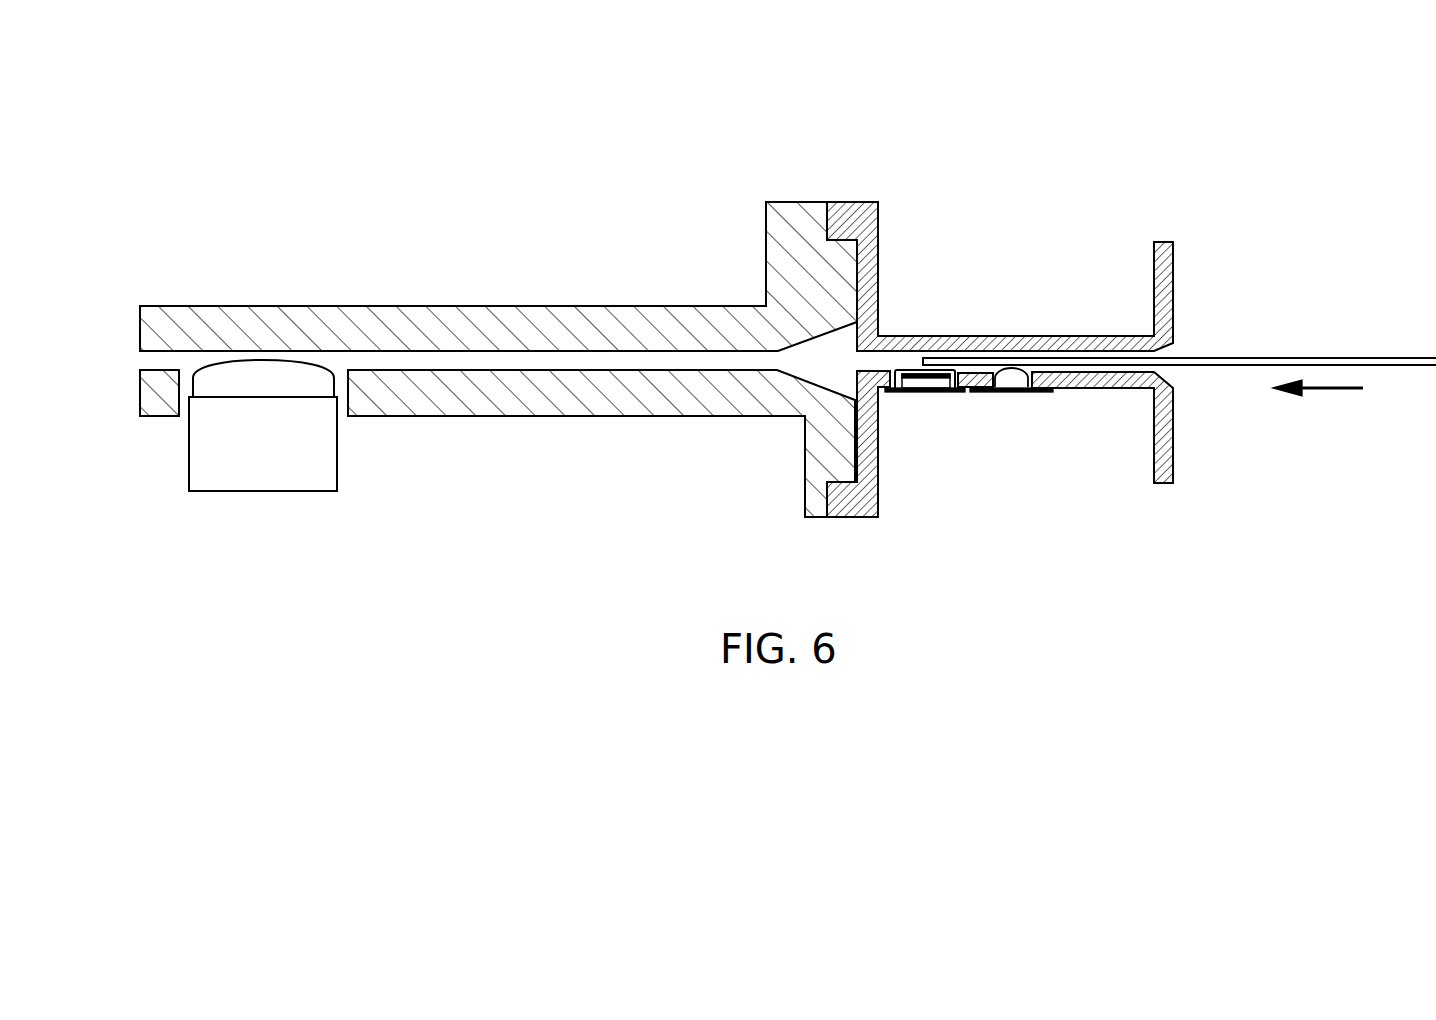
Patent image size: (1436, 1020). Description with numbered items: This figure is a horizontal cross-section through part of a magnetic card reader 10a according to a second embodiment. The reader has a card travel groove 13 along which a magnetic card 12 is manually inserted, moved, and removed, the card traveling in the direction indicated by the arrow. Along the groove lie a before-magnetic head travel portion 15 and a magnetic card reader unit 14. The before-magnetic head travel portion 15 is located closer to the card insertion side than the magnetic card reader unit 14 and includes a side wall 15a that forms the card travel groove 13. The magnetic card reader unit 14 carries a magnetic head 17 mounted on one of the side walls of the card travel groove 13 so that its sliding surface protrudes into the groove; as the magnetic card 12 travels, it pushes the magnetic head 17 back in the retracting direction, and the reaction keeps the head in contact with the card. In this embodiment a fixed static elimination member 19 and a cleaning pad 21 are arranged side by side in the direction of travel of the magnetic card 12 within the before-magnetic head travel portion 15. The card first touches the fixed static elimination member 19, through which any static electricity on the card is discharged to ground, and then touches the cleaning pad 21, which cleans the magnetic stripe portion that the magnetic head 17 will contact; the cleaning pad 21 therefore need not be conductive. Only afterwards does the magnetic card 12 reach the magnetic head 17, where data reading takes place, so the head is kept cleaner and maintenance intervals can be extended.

The magnetic card reader 10a is at (940, 147).
The magnetic card 12 is at (1313, 357).
The card travel groove 13 is at (610, 360).
The magnetic card reader unit 14 is at (498, 306).
The before-magnetic head travel portion 15 is at (1173, 285).
The side wall 15a is at (1115, 388).
The magnetic head 17 is at (263, 477).
The fixed static elimination member 19 is at (1013, 394).
The cleaning pad 21 is at (915, 369).